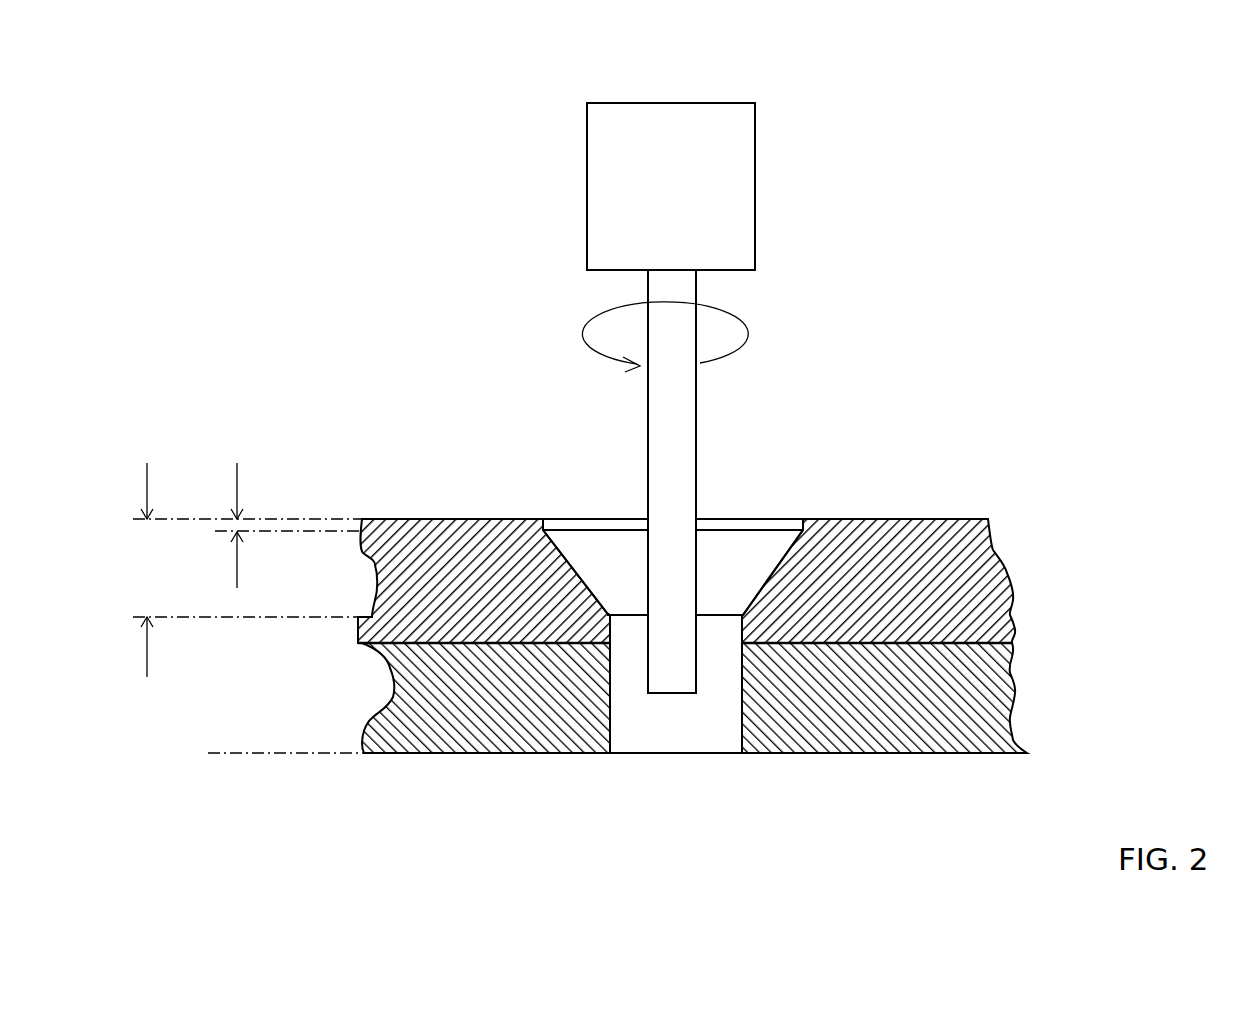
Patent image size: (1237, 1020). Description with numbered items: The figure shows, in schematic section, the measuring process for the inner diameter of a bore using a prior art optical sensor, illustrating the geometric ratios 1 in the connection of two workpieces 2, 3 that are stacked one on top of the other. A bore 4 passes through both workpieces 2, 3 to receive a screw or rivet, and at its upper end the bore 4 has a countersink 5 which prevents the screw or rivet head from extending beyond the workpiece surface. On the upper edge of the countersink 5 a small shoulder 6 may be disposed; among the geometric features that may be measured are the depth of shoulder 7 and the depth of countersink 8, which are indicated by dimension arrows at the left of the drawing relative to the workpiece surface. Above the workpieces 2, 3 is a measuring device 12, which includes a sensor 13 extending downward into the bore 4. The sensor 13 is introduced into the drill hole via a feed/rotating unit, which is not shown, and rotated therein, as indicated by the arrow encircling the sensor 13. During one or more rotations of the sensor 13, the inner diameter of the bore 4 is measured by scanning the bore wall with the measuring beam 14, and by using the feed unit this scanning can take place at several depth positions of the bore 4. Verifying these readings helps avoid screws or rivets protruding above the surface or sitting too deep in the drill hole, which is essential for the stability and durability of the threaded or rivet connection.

The geometric ratios 1 is at (1003, 462).
The workpiece 2 is at (925, 572).
The workpiece 3 is at (917, 707).
The bore 4 is at (715, 703).
The countersink 5 is at (588, 560).
The shoulder 6 is at (567, 525).
The depth of shoulder 7 is at (288, 498).
The depth of countersink 8 is at (248, 580).
The measuring device 12 is at (728, 163).
The sensor 13 is at (680, 437).
The measuring beam 14 is at (628, 673).